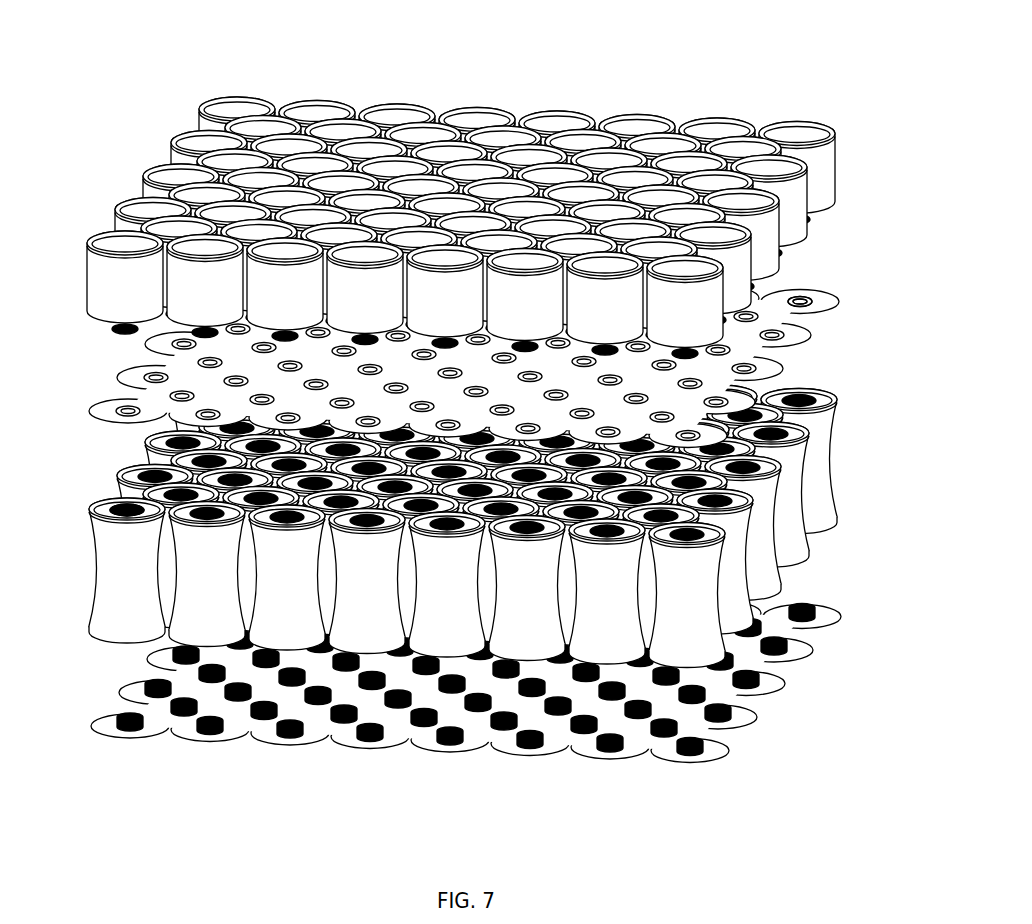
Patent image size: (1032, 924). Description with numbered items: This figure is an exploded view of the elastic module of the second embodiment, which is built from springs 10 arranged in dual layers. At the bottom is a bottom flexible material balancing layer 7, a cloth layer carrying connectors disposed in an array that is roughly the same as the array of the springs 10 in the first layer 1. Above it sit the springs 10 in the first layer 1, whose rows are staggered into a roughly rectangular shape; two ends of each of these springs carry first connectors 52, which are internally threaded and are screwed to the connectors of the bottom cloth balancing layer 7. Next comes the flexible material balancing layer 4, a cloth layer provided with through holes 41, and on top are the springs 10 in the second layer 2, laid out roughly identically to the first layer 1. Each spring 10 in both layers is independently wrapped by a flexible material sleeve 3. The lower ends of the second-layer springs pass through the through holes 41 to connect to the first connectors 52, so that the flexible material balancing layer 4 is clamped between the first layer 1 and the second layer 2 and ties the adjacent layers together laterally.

The first layer 1 is at (815, 480).
The second layer 2 is at (562, 118).
The flexible material sleeve 3 is at (216, 270).
The flexible material balancing layer 4 is at (795, 340).
The through hole 41 is at (807, 302).
The first connector 52 is at (118, 508).
The bottom flexible material balancing layer 7 is at (772, 688).
The spring 10 is at (113, 268).